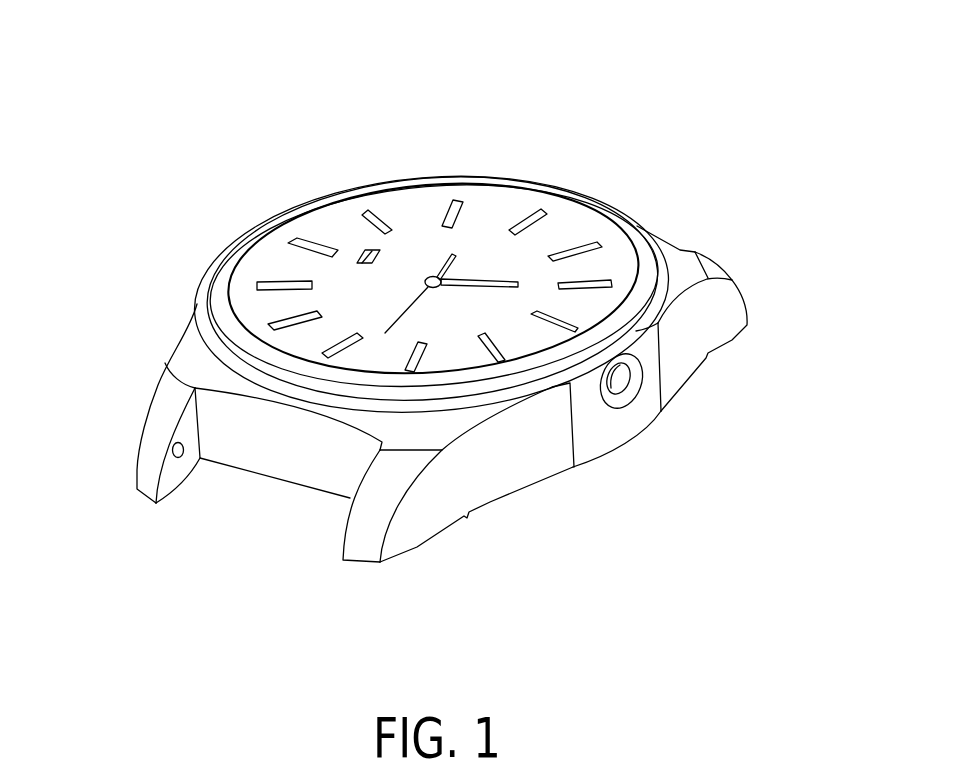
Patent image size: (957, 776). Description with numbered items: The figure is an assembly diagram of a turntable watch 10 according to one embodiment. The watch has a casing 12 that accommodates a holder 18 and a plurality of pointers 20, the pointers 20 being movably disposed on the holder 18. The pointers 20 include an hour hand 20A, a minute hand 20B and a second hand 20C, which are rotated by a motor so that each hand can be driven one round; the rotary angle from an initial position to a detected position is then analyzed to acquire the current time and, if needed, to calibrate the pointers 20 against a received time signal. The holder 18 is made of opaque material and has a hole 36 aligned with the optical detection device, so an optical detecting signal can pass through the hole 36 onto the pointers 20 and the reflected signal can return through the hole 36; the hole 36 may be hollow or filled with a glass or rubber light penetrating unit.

The turntable watch 10 is at (690, 66).
The casing 12 is at (702, 325).
The holder 18 is at (593, 227).
The pointers 20 is at (330, 224).
The hour hand 20A is at (445, 258).
The minute hand 20B is at (485, 280).
The second hand 20C is at (410, 317).
The hole 36 is at (362, 252).